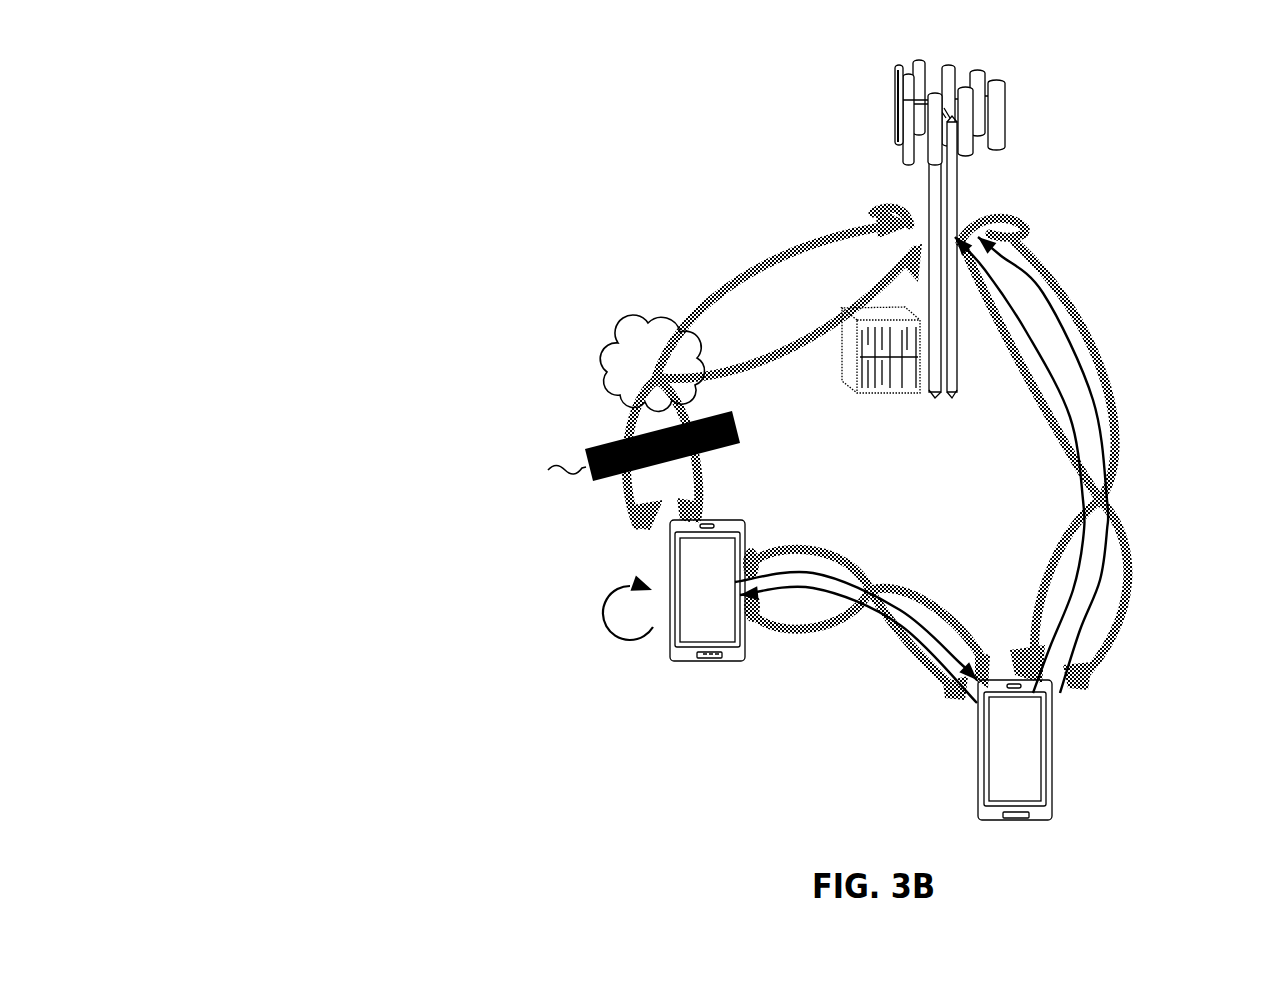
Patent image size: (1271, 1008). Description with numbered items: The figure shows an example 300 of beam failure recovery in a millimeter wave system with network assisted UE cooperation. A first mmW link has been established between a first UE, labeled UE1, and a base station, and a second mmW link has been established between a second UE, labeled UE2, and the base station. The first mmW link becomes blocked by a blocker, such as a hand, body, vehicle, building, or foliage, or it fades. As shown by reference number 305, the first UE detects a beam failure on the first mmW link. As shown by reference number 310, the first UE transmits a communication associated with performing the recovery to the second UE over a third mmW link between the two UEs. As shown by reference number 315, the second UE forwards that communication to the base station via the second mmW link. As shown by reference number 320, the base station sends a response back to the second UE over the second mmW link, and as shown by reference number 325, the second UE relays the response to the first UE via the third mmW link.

The example of BFR in a mmW system with network assisted UE cooperation 300 is at (356, 47).
The beam failure detection 305 is at (592, 608).
The transmission of BFR communication to second UE 310 is at (813, 573).
The transmission of BFR communication to base station 315 is at (1083, 505).
The transmission of BFR response to second UE 320 is at (1108, 505).
The transmission of BFR response to first UE 325 is at (870, 607).